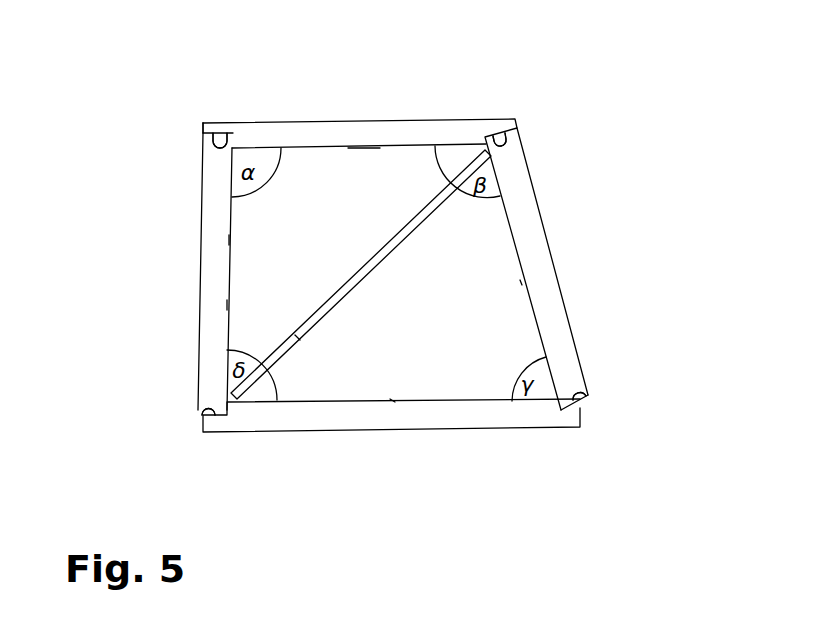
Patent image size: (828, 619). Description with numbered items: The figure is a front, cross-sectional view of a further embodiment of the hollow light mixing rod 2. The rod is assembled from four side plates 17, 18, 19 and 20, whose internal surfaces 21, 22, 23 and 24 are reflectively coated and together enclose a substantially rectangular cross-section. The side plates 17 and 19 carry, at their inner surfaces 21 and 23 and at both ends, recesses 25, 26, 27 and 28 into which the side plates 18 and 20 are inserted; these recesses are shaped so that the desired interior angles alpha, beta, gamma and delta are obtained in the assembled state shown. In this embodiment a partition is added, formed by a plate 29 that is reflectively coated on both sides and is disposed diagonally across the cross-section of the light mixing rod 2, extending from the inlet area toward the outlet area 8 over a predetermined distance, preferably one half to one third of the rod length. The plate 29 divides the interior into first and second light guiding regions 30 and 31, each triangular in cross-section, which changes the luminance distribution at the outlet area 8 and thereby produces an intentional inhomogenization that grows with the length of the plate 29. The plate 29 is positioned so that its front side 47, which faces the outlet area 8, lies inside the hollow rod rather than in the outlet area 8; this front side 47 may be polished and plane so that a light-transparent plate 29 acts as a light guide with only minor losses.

The light mixing rod 2 is at (190, 170).
The outlet area 8 is at (255, 240).
The side plate 17 is at (343, 121).
The side plate 18 is at (548, 232).
The side plate 19 is at (340, 430).
The side plate 20 is at (198, 282).
The internal surface 21 is at (348, 148).
The internal surface 22 is at (522, 270).
The internal surface 23 is at (376, 402).
The internal surface 24 is at (232, 300).
The recess 25 is at (231, 124).
The recess 26 is at (508, 125).
The recess 27 is at (588, 393).
The recess 28 is at (200, 412).
The plate 29 is at (417, 237).
The first light guiding region 30 is at (300, 255).
The second light guiding region 31 is at (405, 352).
The front side 47 is at (300, 342).